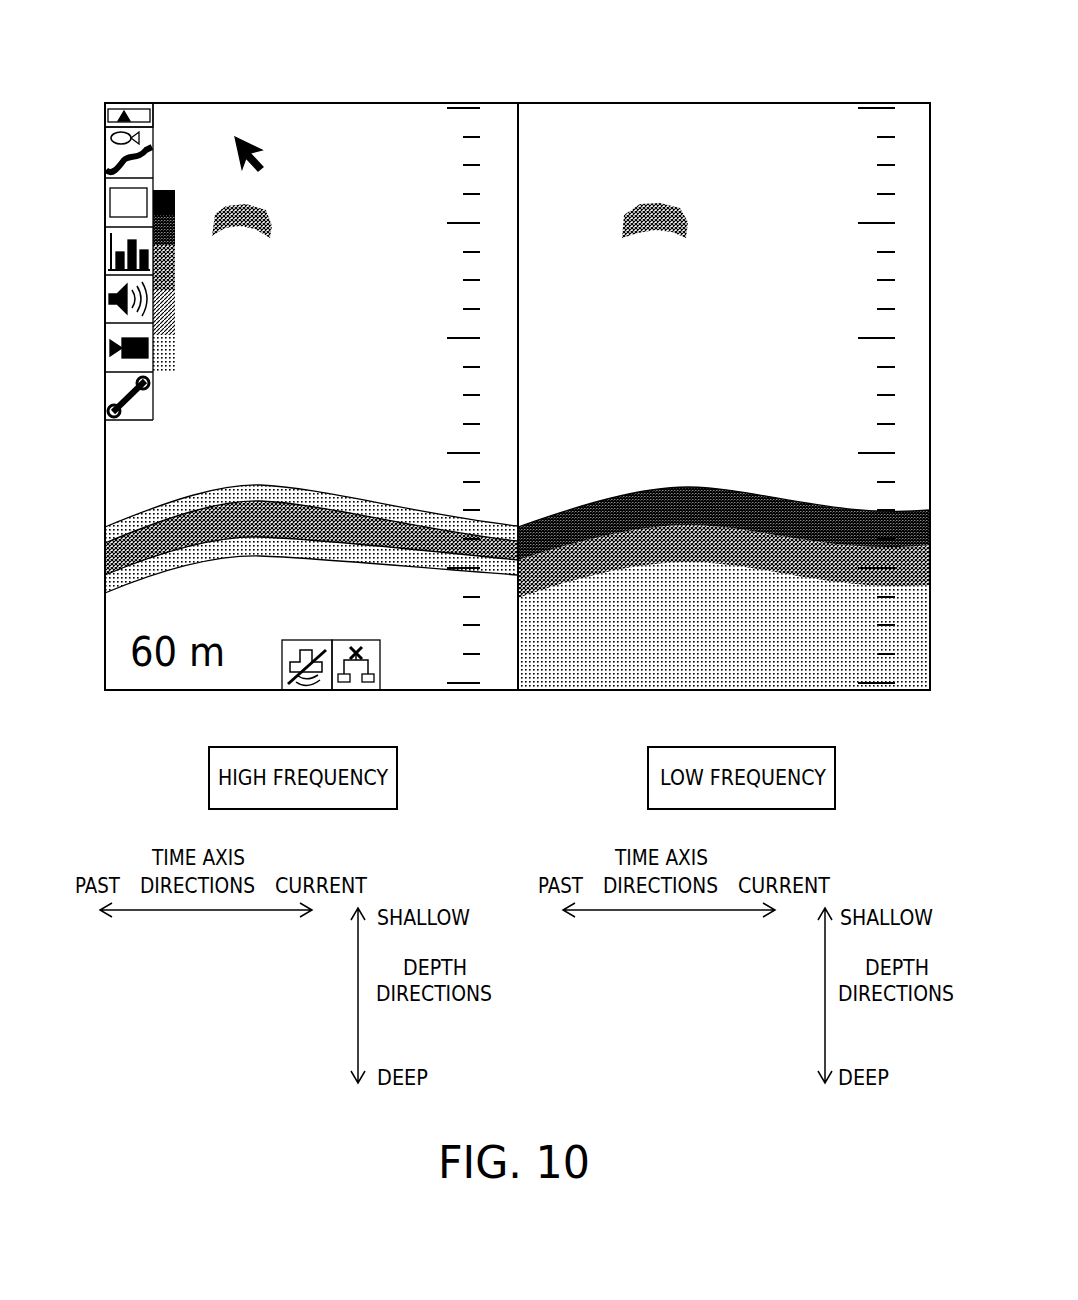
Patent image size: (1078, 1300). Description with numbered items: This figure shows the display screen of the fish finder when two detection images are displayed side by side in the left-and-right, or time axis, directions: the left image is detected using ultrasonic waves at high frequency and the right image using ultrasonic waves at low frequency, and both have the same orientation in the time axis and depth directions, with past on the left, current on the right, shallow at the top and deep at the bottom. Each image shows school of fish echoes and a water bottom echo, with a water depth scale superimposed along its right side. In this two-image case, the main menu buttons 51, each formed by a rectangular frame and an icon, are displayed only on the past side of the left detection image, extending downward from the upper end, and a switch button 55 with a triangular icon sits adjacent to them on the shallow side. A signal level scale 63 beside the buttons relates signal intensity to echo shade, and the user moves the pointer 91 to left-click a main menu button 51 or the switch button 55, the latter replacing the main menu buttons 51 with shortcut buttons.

The main menu button 51 is at (107, 157).
The switch button 55 is at (107, 117).
The signal level scale 63 is at (177, 276).
The pointer 91 is at (258, 143).